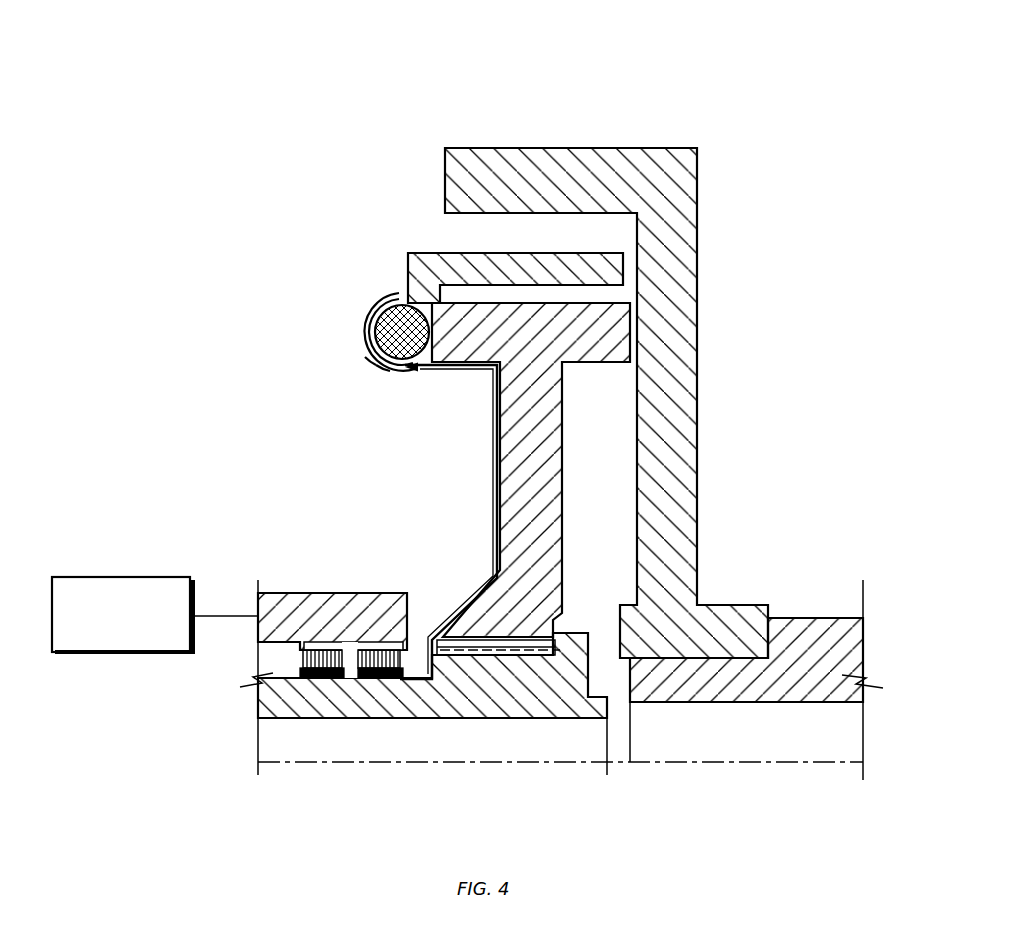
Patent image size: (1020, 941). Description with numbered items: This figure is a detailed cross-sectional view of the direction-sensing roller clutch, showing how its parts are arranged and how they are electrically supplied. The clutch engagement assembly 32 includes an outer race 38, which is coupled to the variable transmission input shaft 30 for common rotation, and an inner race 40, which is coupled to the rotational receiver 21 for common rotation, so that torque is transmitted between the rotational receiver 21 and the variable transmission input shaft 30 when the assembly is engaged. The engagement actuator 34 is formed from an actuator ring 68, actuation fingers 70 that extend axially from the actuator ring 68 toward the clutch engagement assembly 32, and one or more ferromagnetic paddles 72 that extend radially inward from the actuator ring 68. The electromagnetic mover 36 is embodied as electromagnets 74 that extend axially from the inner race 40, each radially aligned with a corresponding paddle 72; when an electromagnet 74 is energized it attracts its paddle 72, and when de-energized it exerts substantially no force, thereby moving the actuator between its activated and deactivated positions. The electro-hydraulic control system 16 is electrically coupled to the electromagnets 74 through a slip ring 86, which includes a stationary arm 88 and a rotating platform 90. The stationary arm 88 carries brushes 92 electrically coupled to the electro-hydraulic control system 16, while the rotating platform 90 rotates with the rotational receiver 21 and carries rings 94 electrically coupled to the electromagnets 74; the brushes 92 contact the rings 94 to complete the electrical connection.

The electro-hydraulic control system 16 is at (112, 577).
The rotational receiver 21 is at (423, 678).
The variable transmission input shaft 30 is at (798, 614).
The clutch engagement assembly 32 is at (648, 147).
The engagement actuator 34 is at (390, 122).
The electromagnetic mover 36 is at (365, 357).
The outer race 38 is at (528, 147).
The inner race 40 is at (588, 363).
The actuator ring 68 is at (410, 304).
The actuation fingers 70 is at (447, 252).
The paddle 72 is at (364, 320).
The electromagnet 74 is at (375, 366).
The slip ring 86 is at (307, 530).
The stationary arm 88 is at (292, 590).
The rotating platform 90 is at (353, 697).
The brushes 92 is at (407, 652).
The rings 94 is at (298, 671).